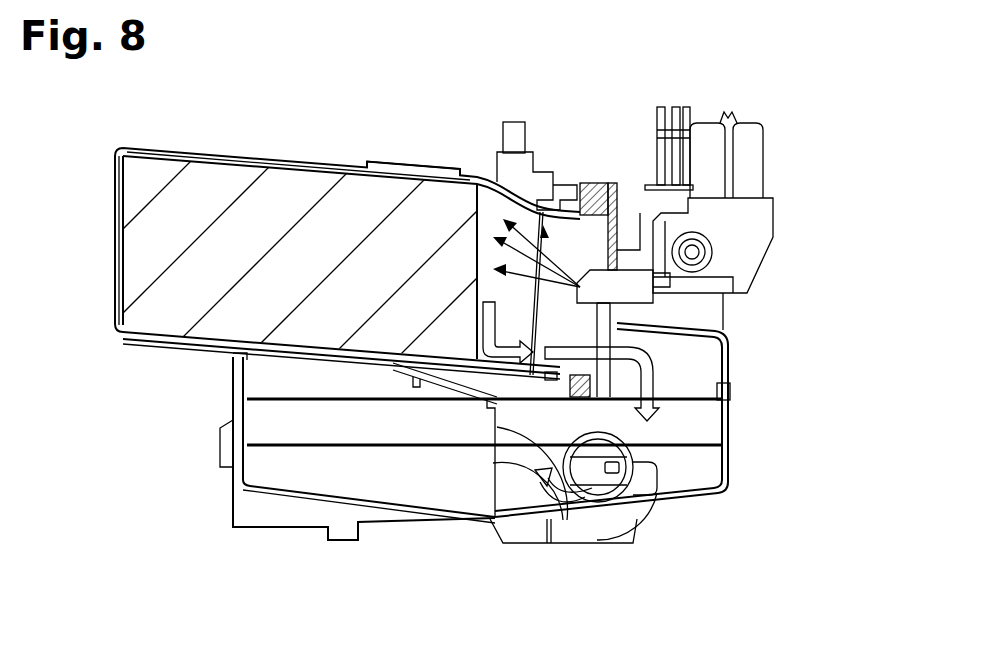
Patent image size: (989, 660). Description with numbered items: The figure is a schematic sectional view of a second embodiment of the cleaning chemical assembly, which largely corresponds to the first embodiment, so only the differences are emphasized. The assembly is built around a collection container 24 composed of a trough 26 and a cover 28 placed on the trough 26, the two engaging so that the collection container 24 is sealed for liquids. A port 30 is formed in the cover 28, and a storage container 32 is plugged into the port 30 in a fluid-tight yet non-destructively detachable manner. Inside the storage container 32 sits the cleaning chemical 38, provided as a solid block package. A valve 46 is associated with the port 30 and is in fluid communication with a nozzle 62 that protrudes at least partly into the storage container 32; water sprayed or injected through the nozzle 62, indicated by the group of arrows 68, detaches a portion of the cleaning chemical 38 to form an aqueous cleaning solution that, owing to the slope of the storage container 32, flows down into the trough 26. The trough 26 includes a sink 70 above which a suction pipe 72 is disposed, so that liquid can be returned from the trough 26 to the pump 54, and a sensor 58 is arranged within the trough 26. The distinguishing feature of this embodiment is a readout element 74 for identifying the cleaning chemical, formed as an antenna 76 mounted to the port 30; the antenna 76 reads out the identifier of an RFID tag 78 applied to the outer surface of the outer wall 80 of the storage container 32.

The collection container 24 is at (757, 391).
The trough 26 is at (728, 425).
The cover 28 is at (725, 322).
The port 30 is at (547, 183).
The storage container 32 is at (330, 163).
The cleaning chemical 38 is at (187, 183).
The valve 46 is at (747, 223).
The pump 54 is at (275, 512).
The sensor 58 is at (623, 475).
The nozzle 62 is at (630, 283).
The group of arrows 68 is at (583, 240).
The sink 70 is at (570, 535).
The suction pipe 72 is at (518, 463).
The readout element 74 is at (502, 157).
The antenna 76 is at (513, 132).
The RFID tag 78 is at (410, 165).
The outer wall 80 is at (270, 162).